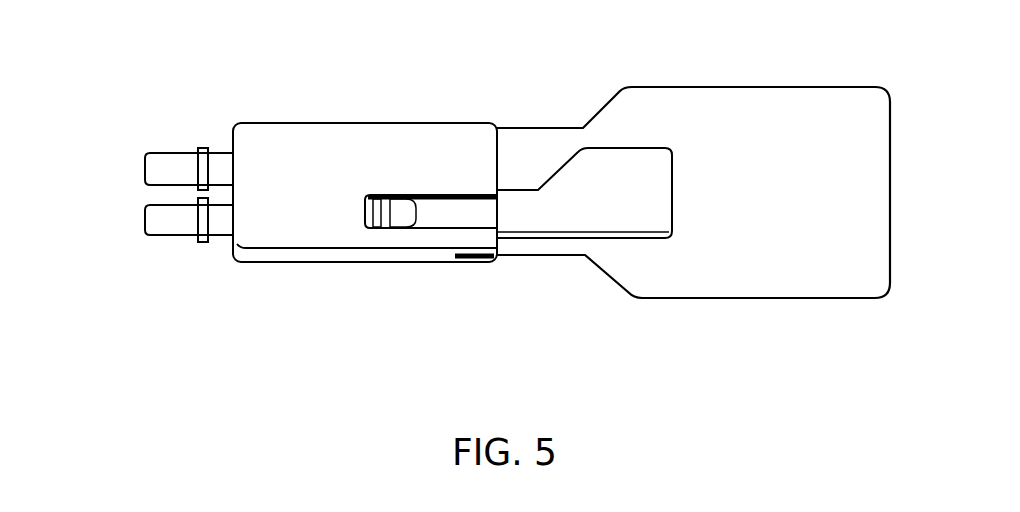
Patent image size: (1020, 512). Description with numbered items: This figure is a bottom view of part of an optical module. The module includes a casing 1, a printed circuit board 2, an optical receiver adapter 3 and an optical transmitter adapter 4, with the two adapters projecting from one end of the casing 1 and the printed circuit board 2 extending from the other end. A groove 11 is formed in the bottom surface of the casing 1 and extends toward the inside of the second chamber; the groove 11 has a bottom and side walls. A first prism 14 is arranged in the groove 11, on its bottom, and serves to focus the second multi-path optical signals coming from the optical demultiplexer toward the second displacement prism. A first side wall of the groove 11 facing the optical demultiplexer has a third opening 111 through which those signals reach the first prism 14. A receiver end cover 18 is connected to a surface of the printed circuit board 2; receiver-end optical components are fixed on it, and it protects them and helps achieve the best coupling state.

The casing 1 is at (365, 137).
The printed circuit board 2 is at (748, 157).
The optical receiver adapter 3 is at (175, 217).
The optical transmitter adapter 4 is at (162, 168).
The groove 11 is at (448, 218).
The first prism 14 is at (400, 222).
The receiver end cover 18 is at (610, 162).
The third opening 111 is at (373, 205).